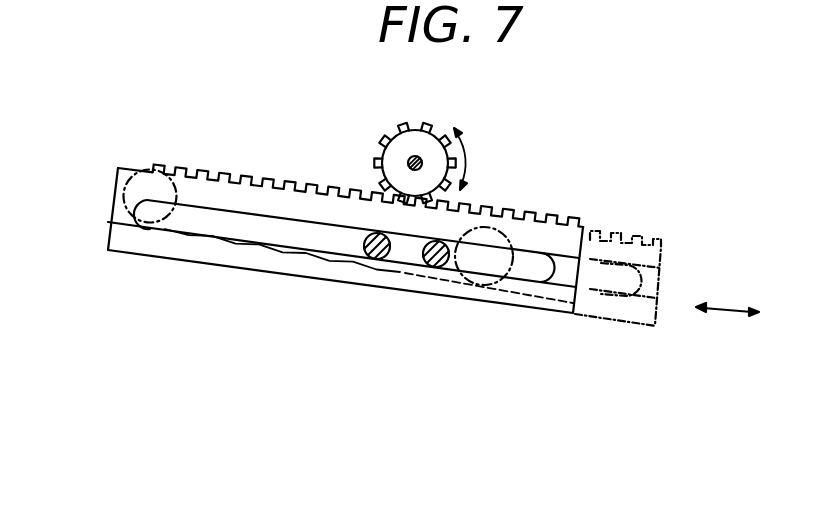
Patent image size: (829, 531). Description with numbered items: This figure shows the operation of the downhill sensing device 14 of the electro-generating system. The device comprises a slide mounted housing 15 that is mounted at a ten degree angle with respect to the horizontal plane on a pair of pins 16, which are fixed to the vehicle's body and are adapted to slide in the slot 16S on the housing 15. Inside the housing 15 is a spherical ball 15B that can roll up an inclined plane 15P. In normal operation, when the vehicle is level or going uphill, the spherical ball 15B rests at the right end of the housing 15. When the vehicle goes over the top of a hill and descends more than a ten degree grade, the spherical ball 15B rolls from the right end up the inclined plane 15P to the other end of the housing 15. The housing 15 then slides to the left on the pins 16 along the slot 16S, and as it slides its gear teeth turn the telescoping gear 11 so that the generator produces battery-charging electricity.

The telescoping gear 11 is at (381, 158).
The downhill sensing device 14 is at (140, 239).
The slide mounted housing 15 is at (537, 315).
The spherical ball 15B is at (119, 191).
The inclined plane 15P is at (297, 257).
The pins 16 is at (437, 267).
The slot 16S is at (447, 247).